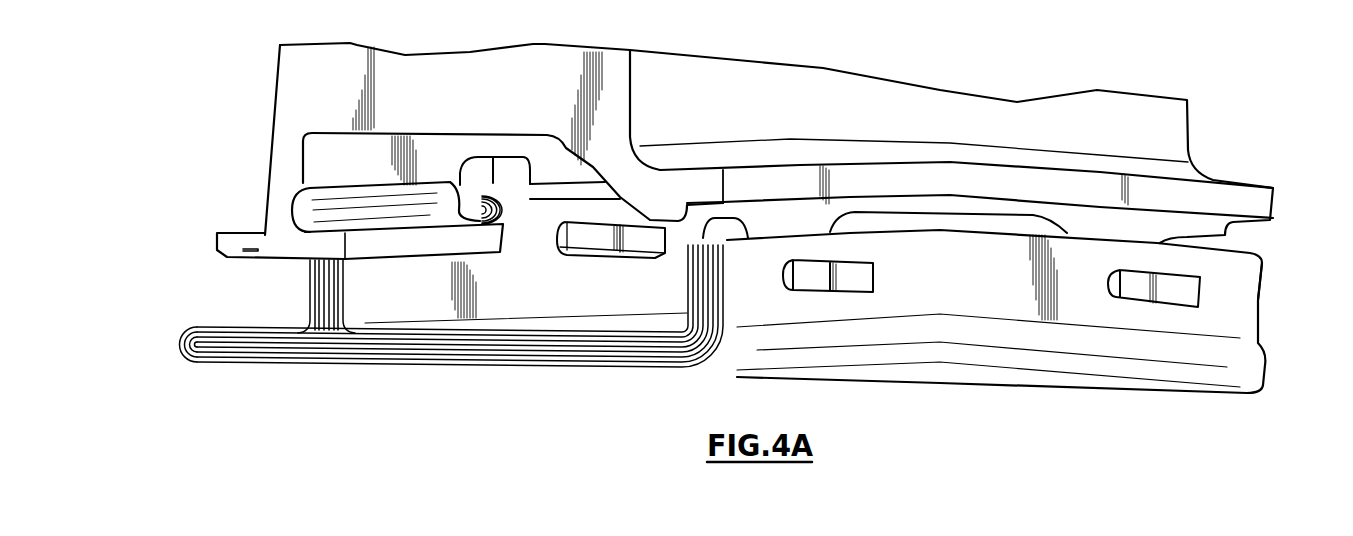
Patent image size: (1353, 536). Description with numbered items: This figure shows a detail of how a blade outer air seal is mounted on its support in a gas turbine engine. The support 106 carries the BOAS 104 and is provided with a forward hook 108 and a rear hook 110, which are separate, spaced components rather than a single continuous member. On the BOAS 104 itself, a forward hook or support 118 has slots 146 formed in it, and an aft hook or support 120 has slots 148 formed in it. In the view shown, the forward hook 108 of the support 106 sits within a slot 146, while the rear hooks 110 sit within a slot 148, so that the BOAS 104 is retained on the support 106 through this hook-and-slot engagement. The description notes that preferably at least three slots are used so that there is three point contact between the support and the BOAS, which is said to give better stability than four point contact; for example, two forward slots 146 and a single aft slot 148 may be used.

The BOAS 104 is at (347, 345).
The support 106 is at (313, 102).
The forward hook 108 is at (597, 240).
The rear hook 110 is at (1188, 283).
The hook or support 118 is at (388, 297).
The hook or support 120 is at (940, 283).
The slots 146 is at (608, 247).
The slots 148 is at (1112, 289).